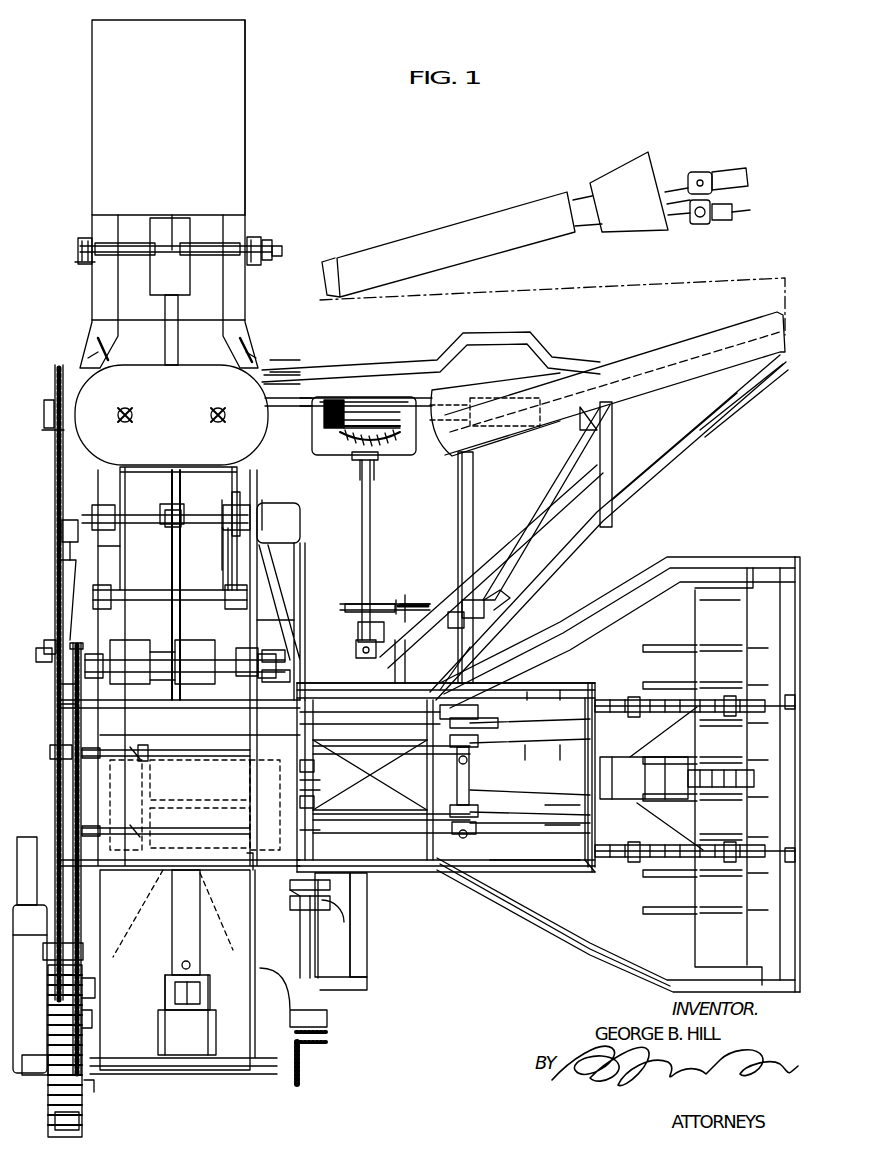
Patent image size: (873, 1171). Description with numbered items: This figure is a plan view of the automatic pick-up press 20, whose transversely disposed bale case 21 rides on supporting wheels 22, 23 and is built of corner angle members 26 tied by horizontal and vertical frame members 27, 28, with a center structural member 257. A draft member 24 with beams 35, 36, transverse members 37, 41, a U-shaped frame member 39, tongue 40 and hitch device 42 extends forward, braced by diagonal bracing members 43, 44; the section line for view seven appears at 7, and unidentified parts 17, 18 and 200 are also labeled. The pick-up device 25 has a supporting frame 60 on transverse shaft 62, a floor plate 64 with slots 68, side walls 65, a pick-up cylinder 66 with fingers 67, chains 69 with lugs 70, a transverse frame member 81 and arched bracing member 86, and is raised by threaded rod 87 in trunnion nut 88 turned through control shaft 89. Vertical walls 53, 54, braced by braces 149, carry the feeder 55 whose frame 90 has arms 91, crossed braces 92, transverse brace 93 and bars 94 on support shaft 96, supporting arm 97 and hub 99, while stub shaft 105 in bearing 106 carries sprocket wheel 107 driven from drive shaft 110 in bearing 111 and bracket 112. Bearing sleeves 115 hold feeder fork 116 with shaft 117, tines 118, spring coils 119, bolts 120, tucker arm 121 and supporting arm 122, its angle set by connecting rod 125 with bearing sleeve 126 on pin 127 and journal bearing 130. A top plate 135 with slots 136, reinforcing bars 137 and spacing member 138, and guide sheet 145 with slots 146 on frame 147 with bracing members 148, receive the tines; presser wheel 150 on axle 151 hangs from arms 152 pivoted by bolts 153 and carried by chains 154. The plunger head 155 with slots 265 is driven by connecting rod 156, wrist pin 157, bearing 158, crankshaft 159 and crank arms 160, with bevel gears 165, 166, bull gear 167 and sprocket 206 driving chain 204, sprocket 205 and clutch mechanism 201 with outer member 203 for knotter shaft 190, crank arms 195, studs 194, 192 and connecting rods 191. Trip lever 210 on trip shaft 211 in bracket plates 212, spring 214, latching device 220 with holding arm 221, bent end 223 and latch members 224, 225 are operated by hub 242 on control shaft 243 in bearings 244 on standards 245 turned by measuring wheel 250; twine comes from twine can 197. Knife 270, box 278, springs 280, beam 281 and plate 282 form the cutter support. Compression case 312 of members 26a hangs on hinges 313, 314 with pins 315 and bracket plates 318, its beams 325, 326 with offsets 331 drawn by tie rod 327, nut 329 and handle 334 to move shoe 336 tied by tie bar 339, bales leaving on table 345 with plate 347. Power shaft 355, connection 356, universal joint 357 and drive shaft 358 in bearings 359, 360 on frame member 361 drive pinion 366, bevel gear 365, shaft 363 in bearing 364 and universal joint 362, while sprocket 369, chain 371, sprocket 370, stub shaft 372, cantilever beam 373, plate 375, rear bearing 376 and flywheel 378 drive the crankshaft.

The section line 7 is at (40, 820).
The post 17 is at (600, 822).
The rail 18 is at (400, 662).
The automatic pick-up press 20 is at (398, 953).
The bale case 21 is at (76, 490).
The supporting wheel 22 is at (272, 406).
The supporting wheel 23 is at (332, 925).
The draft member 24 is at (632, 435).
The pick-up device 25 is at (694, 544).
The structural angle member 26 is at (238, 476).
The structural angle member 26a is at (100, 291).
The horizontal frame member 27 is at (264, 388).
The vertical frame member 28 is at (80, 380).
The structural beam 35 is at (378, 372).
The structural beam 36 is at (578, 548).
The transverse frame member 37 is at (600, 452).
The U-shaped frame member 39 is at (334, 980).
The draft tongue 40 is at (734, 368).
The second transverse member 41 is at (470, 492).
The hitch device 42 is at (676, 182).
The diagonal bracing member 43 is at (452, 354).
The diagonal bracing member 44 is at (448, 598).
The vertical wall 53 is at (300, 720).
The vertical wall 54 is at (272, 870).
The feeder 55 is at (440, 878).
The supporting frame 60 is at (556, 617).
The transverse shaft 62 is at (398, 674).
The floor plate 64 is at (600, 658).
The side wall 65 is at (638, 614).
The pick-up cylinder 66 is at (740, 616).
The crop engaging finger 67 is at (760, 643).
The slot 68 is at (648, 654).
The chain 69 is at (618, 700).
The lug 70 is at (632, 720).
The transverse frame member 81 is at (362, 924).
The arched bracing member 86 is at (795, 942).
The threaded rod 87 is at (406, 610).
The trunnion nut 88 is at (398, 604).
The control shaft 89 is at (636, 482).
The frame 90 is at (343, 818).
The arm 91 is at (391, 800).
The crossed brace 92 is at (366, 818).
The transverse brace 93 is at (432, 784).
The bar 94 is at (300, 798).
The support shaft 96 is at (300, 766).
The supporting arm 97 is at (370, 775).
The hub 99 is at (358, 648).
The stub shaft 105 is at (300, 832).
The bearing 106 is at (358, 886).
The sprocket wheel 107 is at (258, 916).
The drive shaft 110 is at (300, 948).
The bearing 111 is at (334, 929).
The bracket 112 is at (316, 1012).
The bearing sleeve 115 is at (466, 742).
The feeder fork 116 is at (556, 732).
The transverse shaft 117 is at (466, 790).
The tine 118 is at (540, 800).
The spring coil 119 is at (458, 768).
The bolt 120 is at (450, 836).
The tucker arm 121 is at (527, 692).
The supporting arm 122 is at (488, 717).
The connecting rod 125 is at (346, 776).
The bearing sleeve 126 is at (467, 713).
The pin 127 is at (392, 780).
The journal bearing 130 is at (300, 742).
The top plate 135 is at (200, 760).
The slot 136 is at (178, 748).
The reinforcing bar 137 is at (200, 750).
The spacing member 138 is at (145, 748).
The guide sheet 145 is at (520, 850).
The slot 146 is at (560, 690).
The structural frame 147 is at (577, 877).
The bracing member 148 is at (455, 690).
The brace 149 is at (266, 618).
The presser wheel 150 is at (658, 758).
The axle 151 is at (638, 778).
The arm 152 is at (765, 726).
The bolt 153 is at (788, 702).
The chain 154 is at (576, 810).
The plunger head 155 is at (204, 922).
The connecting rod 156 is at (200, 902).
The wrist pin 157 is at (208, 866).
The connecting rod bearing 158 is at (208, 980).
The crankshaft 159 is at (46, 1070).
The crank arm 160 is at (178, 1012).
The bevel gear 165 is at (304, 1076).
The bevel gear 166 is at (326, 1040).
The bull gear 167 is at (82, 1122).
The knotter shaft 190 is at (168, 664).
The connecting rod 191 is at (280, 580).
The stud 192 is at (72, 520).
The stud 194 is at (40, 656).
The crank arm 195 is at (242, 652).
The twine can 197 is at (136, 392).
The shaft 200 is at (124, 654).
The clutch mechanism 201 is at (72, 700).
The outer member 203 is at (50, 644).
The drive chain 204 is at (76, 732).
The sprocket 205 is at (66, 690).
The sprocket 206 is at (88, 1088).
The trip lever 210 is at (58, 626).
The trip shaft 211 is at (140, 596).
The bracket plate 212 is at (102, 550).
The tension spring 214 is at (306, 592).
The latching device 220 is at (264, 506).
The holding arm 221 is at (232, 570).
The bent outer end 223 is at (218, 548).
The latch member 224 is at (232, 498).
The latch member 225 is at (224, 498).
The supporting hub 242 is at (224, 516).
The control shaft 243 is at (140, 510).
The bearing 244 is at (86, 500).
The standard 245 is at (110, 505).
The measuring wheel 250 is at (174, 490).
The center structural member 257 is at (170, 508).
The slot 265 is at (146, 796).
The knife 270 is at (300, 786).
The box 278 is at (284, 676).
The compression spring 280 is at (310, 611).
The horizontal beam 281 is at (306, 582).
The horizontal plate 282 is at (302, 518).
The compression case 312 is at (273, 218).
The hinge 313 is at (118, 361).
The hinge 314 is at (232, 356).
The hinge pin 315 is at (80, 362).
The bracket plate 318 is at (110, 342).
The compression beam member 325 is at (253, 238).
The compression beam member 326 is at (90, 240).
The tie rod 327 is at (172, 246).
The nut 329 is at (268, 242).
The offset 331 is at (78, 246).
The handle 334 is at (278, 253).
The compression shoe 336 is at (182, 272).
The tie bar 339 is at (174, 326).
The table 345 is at (176, 85).
The plate 347 is at (246, 118).
The power shaft 355 is at (341, 262).
The flexible power transmitting connection 356 is at (698, 218).
The universal joint 357 is at (493, 398).
The drive shaft 358 is at (392, 400).
The bearing 359 is at (76, 410).
The bearing 360 is at (308, 408).
The U-shaped frame member 361 is at (372, 462).
The universal joint 362 is at (364, 640).
The transverse shaft 363 is at (370, 522).
The bearing 364 is at (362, 454).
The bevel gear 365 is at (392, 446).
The drive pinion 366 is at (334, 400).
The sprocket 369 is at (54, 380).
The sprocket 370 is at (48, 922).
The chain 371 is at (54, 522).
The stub shaft 372 is at (63, 955).
The cantilever beam 373 is at (84, 988).
The supporting plate 375 is at (88, 1016).
The rear bearing 376 is at (44, 1051).
The flywheel 378 is at (25, 845).